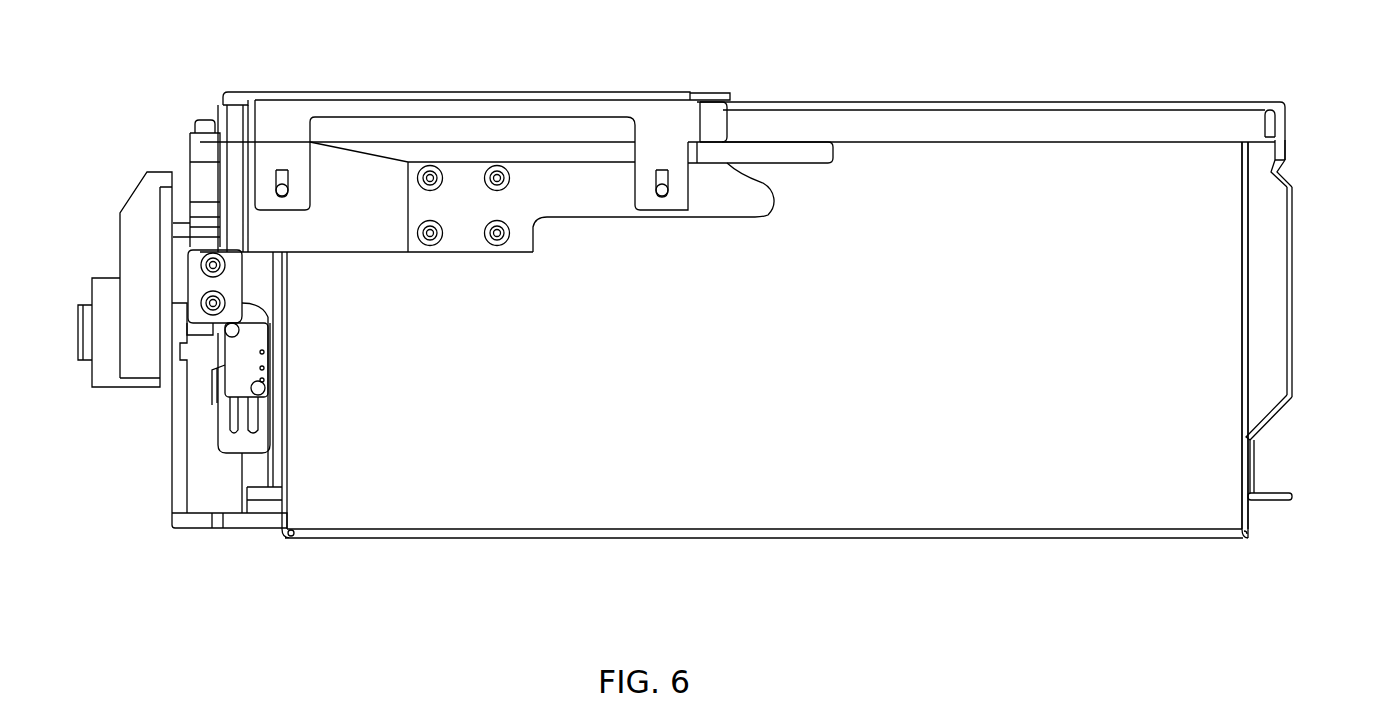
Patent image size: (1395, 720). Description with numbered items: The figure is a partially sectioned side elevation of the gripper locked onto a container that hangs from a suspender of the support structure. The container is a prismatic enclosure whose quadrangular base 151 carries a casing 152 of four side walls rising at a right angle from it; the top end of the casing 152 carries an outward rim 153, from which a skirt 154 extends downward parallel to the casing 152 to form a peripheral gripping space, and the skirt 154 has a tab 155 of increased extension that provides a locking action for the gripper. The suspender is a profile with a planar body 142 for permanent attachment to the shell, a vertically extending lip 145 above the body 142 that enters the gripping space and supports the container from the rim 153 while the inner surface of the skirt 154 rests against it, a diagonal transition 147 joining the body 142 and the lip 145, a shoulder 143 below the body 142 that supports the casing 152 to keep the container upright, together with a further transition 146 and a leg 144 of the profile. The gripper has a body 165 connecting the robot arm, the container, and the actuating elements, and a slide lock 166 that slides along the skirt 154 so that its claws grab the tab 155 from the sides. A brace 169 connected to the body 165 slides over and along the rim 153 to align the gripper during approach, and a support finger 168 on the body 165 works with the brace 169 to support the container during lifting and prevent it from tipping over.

The body 142 is at (1293, 227).
The shoulder 143 is at (1254, 458).
The leg 144 is at (1280, 500).
The lip 145 is at (1286, 138).
The transition 146 is at (1270, 425).
The transition 147 is at (1288, 168).
The base 151 is at (947, 535).
The casing 152 is at (1243, 178).
The rim 153 is at (1255, 100).
The skirt 154 is at (1285, 128).
The tab 155 is at (767, 150).
The body 165 is at (118, 228).
The slide lock 166 is at (197, 174).
The support finger 168 is at (578, 192).
The brace 169 is at (540, 97).